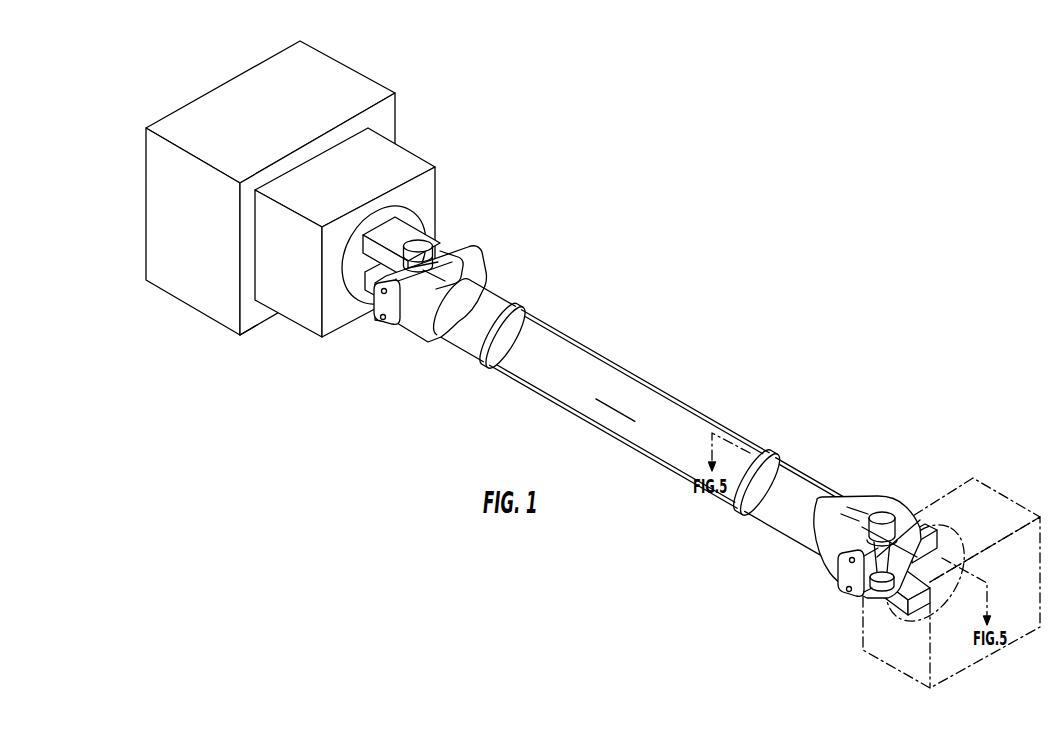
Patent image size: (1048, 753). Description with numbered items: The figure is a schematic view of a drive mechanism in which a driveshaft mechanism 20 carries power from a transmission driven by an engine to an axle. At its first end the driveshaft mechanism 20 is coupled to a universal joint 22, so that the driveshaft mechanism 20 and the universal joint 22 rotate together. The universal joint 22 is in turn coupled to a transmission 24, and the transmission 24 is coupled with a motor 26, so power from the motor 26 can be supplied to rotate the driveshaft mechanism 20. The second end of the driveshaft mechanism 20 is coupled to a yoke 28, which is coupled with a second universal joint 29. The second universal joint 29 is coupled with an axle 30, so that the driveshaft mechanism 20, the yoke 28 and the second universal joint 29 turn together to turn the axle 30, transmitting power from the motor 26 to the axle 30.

The driveshaft mechanism 20 is at (633, 353).
The universal joint 22 is at (441, 248).
The transmission 24 is at (417, 156).
The motor 26 is at (362, 73).
The yoke 28 is at (892, 507).
The second universal joint 29 is at (908, 518).
The axle 30 is at (987, 513).